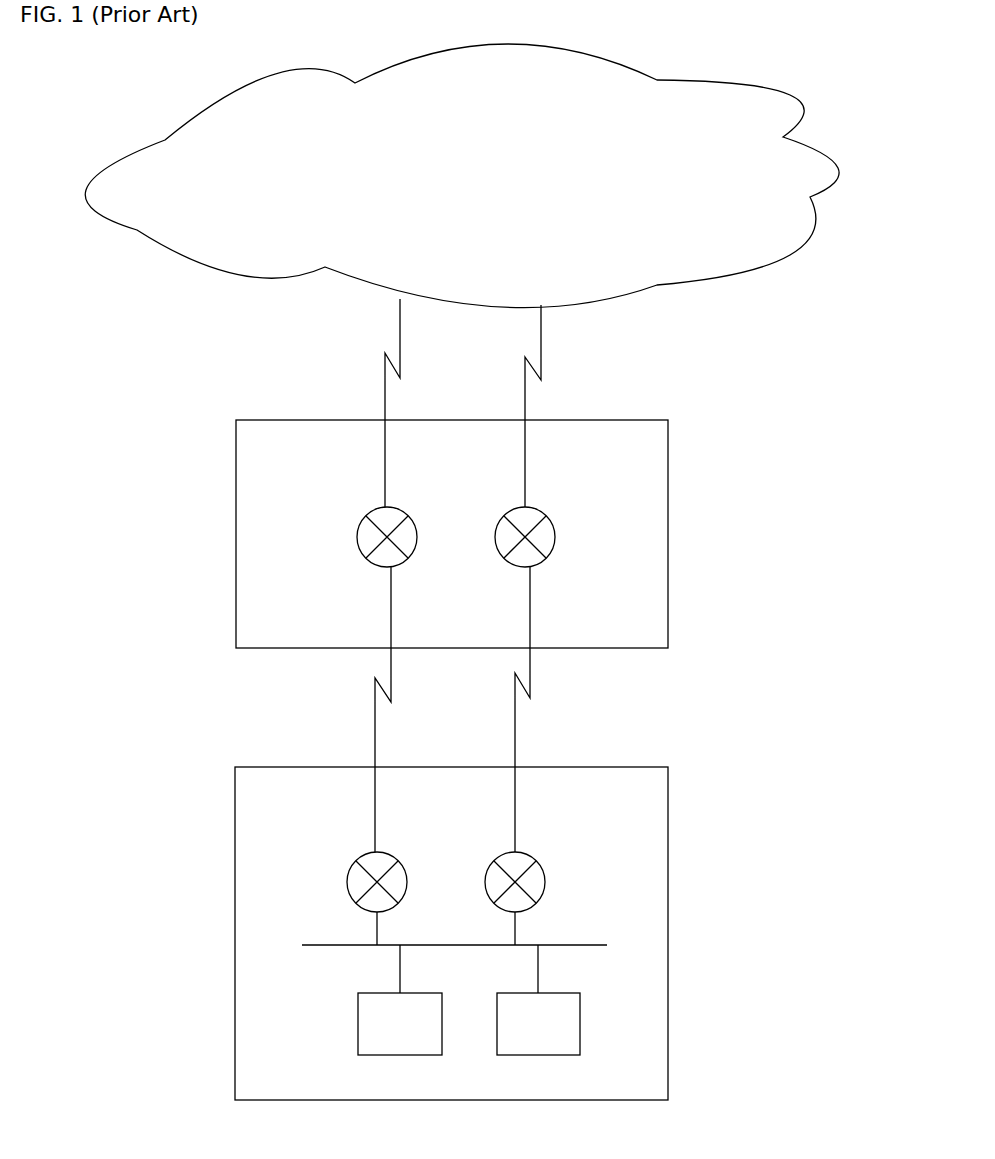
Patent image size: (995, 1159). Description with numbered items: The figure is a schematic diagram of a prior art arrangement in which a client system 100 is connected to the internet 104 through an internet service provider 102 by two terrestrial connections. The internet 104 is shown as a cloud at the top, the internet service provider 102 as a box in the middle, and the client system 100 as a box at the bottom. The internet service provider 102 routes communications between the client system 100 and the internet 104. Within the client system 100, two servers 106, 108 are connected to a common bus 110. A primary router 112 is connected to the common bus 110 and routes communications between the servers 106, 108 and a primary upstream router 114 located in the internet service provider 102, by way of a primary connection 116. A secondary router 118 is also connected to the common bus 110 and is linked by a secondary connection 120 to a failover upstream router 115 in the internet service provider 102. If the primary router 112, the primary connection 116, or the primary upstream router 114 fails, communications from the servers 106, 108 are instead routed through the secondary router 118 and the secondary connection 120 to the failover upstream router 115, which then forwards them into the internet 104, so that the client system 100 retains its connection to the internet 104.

The client system 100 is at (232, 1047).
The internet service provider 102 is at (237, 562).
The internet 104 is at (187, 263).
The server 106 is at (388, 1055).
The server 108 is at (553, 1055).
The common bus 110 is at (562, 943).
The primary router 112 is at (345, 880).
The primary upstream router 114 is at (402, 510).
The failover upstream router 115 is at (555, 530).
The primary connection 116 is at (373, 735).
The secondary router 118 is at (545, 870).
The secondary connection 120 is at (517, 733).